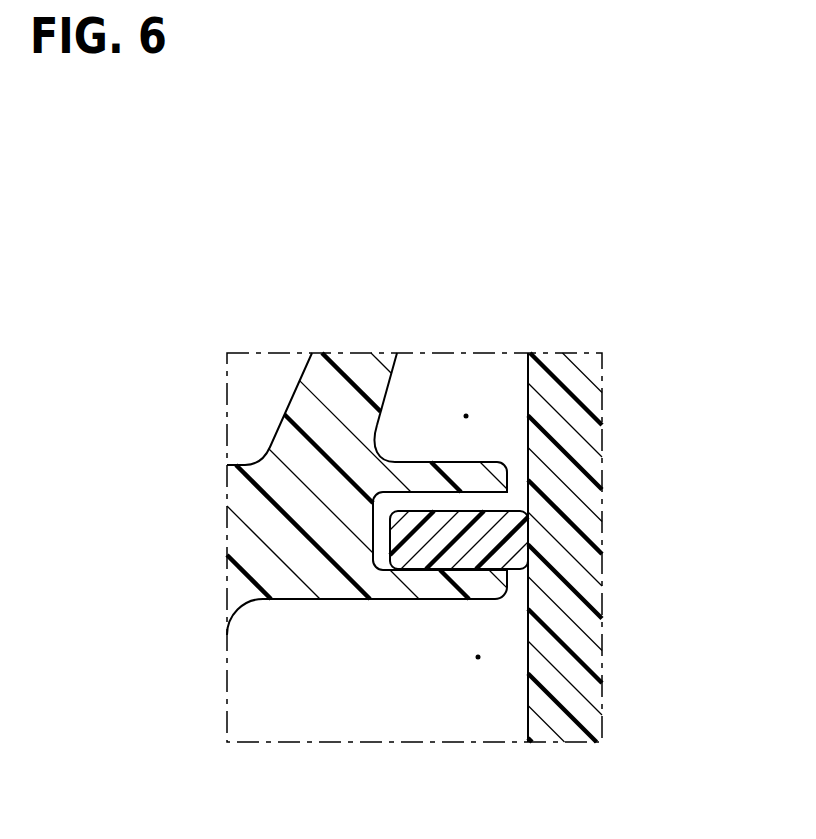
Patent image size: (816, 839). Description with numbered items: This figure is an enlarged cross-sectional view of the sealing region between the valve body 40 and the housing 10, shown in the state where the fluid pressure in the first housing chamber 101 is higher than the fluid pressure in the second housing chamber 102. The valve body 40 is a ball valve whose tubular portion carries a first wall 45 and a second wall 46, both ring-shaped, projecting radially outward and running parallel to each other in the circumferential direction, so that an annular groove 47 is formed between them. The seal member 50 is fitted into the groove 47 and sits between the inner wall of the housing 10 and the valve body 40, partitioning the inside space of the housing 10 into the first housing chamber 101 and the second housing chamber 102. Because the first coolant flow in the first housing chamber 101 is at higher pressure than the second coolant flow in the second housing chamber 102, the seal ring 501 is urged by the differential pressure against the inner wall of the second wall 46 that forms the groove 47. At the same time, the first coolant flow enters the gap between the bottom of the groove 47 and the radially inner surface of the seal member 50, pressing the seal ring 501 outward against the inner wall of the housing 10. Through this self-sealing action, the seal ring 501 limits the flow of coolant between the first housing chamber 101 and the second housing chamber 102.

The housing 10 is at (587, 491).
The valve body 40 is at (296, 391).
The first wall 45 is at (463, 475).
The second wall 46 is at (425, 583).
The groove 47 is at (375, 513).
The seal member 50 is at (455, 552).
The seal ring 501 is at (459, 540).
The first housing chamber 101 is at (467, 414).
The second housing chamber 102 is at (479, 658).